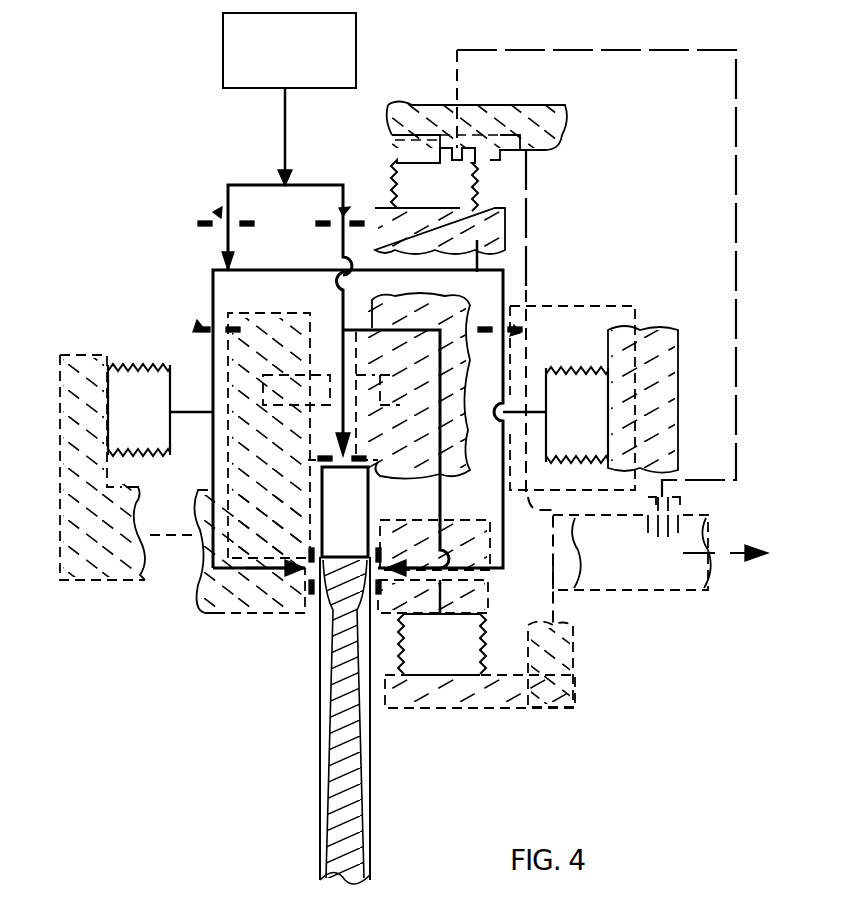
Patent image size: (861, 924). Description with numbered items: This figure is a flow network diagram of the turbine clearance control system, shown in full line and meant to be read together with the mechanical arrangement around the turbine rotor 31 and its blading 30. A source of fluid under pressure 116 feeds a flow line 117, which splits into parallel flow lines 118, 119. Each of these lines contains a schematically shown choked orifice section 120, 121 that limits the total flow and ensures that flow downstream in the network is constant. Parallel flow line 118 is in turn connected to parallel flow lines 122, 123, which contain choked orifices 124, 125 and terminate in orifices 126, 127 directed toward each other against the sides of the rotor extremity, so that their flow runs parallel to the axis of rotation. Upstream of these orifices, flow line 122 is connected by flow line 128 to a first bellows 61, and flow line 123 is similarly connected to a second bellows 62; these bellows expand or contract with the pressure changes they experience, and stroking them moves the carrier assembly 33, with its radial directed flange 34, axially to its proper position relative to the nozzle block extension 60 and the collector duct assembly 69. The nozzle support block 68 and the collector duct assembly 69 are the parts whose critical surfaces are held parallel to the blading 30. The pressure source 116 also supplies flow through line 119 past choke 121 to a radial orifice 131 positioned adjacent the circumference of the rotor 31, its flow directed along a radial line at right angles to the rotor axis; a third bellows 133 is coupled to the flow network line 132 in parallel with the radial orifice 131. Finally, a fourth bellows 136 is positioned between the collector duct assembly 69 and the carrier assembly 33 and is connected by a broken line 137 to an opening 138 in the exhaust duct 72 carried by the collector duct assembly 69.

The source of fluid under pressure 116 is at (356, 35).
The flow line 117 is at (282, 118).
The parallel flow line 118 is at (226, 186).
The parallel flow line 119 is at (340, 190).
The choked orifice section 120 is at (218, 212).
The choked orifice section 121 is at (346, 212).
The parallel flow line 122 is at (213, 278).
The parallel flow line 123 is at (505, 288).
The choked orifice 124 is at (200, 326).
The choked orifice 125 is at (514, 330).
The nozzle support block 68 is at (310, 322).
The radial orifice 131 is at (338, 455).
The blading 30 is at (345, 530).
The flow network line 132 is at (440, 487).
The turbine rotor 31 is at (350, 790).
The orifice 126 is at (303, 578).
The orifice 127 is at (366, 576).
The nozzle block extension 60 is at (78, 485).
The first bellows 61 is at (137, 383).
The flow line 128 is at (190, 412).
The second bellows 62 is at (585, 388).
The collector duct assembly 69 is at (500, 234).
The fourth bellows 136 is at (482, 190).
The carrier assembly 33 is at (515, 118).
The broken line 137 is at (737, 82).
The exhaust duct 72 is at (672, 578).
The opening 138 is at (705, 534).
The third bellows 133 is at (478, 672).
The radial directed flange 34 is at (565, 670).